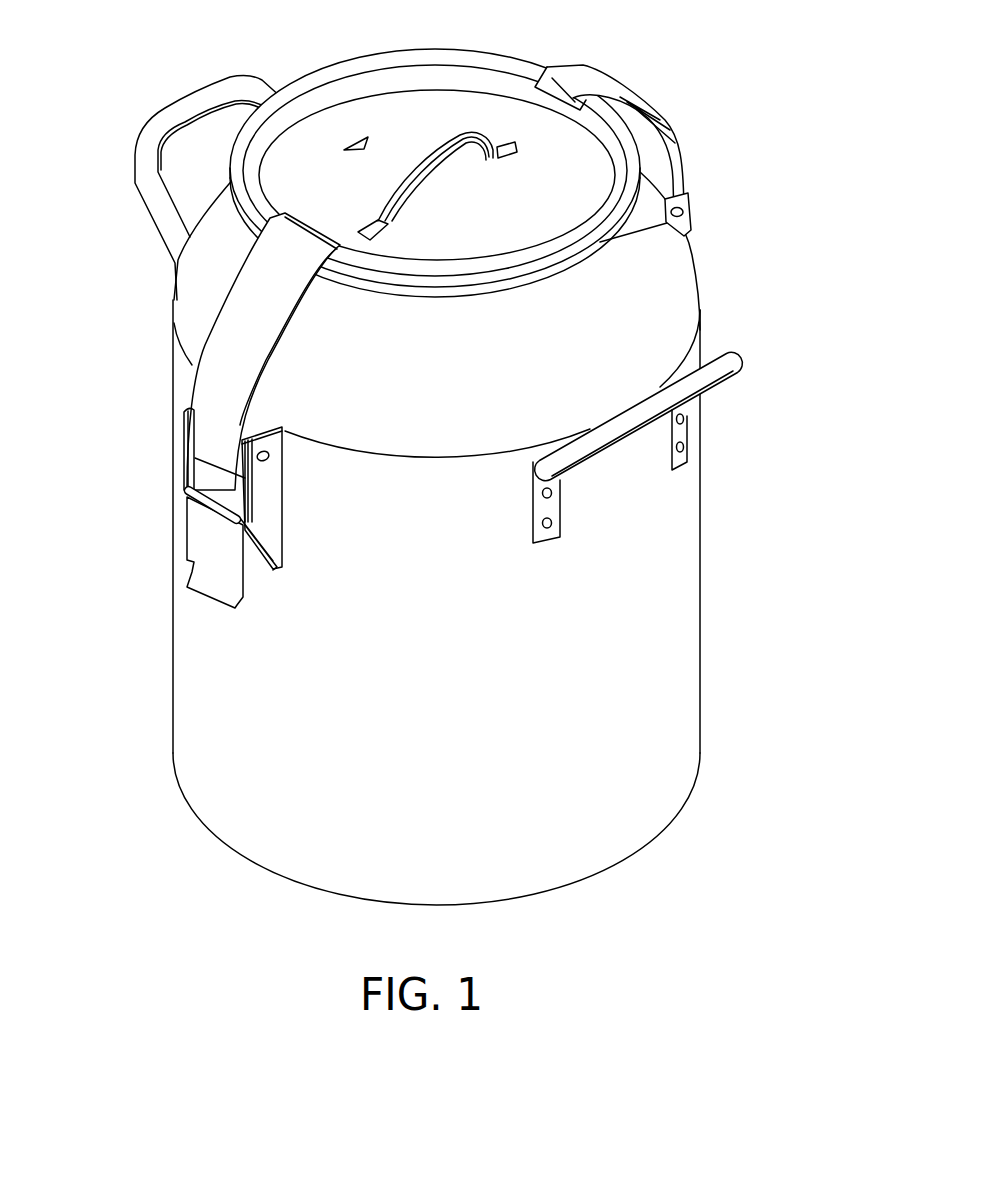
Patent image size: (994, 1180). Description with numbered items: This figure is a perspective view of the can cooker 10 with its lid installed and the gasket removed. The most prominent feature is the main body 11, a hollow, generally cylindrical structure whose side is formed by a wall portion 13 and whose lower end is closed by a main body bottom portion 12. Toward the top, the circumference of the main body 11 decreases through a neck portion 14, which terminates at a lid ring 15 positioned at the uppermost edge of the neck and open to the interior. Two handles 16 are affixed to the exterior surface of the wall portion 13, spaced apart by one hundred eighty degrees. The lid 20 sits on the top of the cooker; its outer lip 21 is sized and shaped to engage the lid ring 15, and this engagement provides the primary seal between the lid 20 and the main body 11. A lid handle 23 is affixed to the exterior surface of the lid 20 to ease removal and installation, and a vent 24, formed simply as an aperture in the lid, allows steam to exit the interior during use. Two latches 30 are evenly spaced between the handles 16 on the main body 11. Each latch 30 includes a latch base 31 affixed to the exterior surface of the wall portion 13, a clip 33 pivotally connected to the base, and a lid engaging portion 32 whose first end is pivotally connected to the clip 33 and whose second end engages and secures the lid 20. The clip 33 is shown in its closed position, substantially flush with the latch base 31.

The can cooker 10 is at (439, 452).
The main body 11 is at (434, 538).
The main body bottom portion 12 is at (633, 844).
The wall portion 13 is at (702, 590).
The neck portion 14 is at (647, 283).
The lid ring 15 is at (690, 227).
The handles 16 is at (137, 185).
The lid 20 is at (435, 148).
The outer lip 21 is at (392, 50).
The lid handle 23 is at (430, 168).
The vent 24 is at (353, 128).
The latch 30 is at (245, 517).
The latch base 31 is at (268, 480).
The lid engaging portion 32 is at (590, 78).
The clip 33 is at (208, 540).